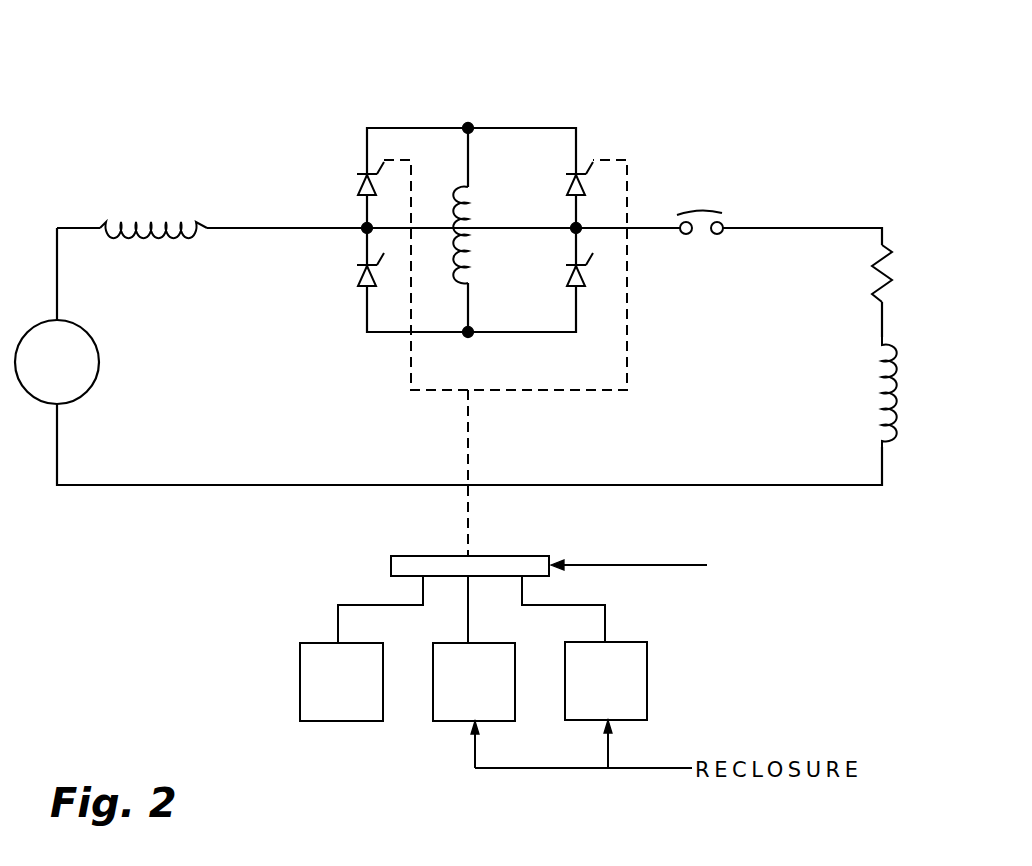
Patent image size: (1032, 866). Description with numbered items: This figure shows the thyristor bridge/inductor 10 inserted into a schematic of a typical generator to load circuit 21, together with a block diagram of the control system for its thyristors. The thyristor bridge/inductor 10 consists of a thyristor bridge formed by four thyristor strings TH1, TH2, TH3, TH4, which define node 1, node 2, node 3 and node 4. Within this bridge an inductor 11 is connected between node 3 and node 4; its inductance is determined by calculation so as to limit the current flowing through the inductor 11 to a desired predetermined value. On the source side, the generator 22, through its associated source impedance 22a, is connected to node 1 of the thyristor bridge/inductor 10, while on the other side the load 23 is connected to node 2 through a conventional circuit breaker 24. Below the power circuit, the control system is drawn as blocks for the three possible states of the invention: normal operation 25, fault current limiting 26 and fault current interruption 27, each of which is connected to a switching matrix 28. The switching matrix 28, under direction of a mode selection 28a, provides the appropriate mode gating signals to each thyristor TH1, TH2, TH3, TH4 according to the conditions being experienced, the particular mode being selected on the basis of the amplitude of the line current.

The thyristor bridge/inductor 10 is at (533, 95).
The node 3 is at (468, 126).
The node 4 is at (468, 334).
The node 1 is at (376, 228).
The node 2 is at (568, 228).
The inductor 11 is at (484, 196).
The thyristor string TH1 is at (355, 186).
The thyristor string TH2 is at (563, 270).
The thyristor string TH3 is at (565, 186).
The thyristor string TH4 is at (352, 268).
The generator to load circuit 21 is at (305, 500).
The generator 22 is at (99, 345).
The source impedance 22a is at (120, 220).
The load 23 is at (866, 331).
The circuit breaker 24 is at (690, 210).
The normal operation 25 is at (300, 697).
The fault current limiting 26 is at (433, 708).
The fault current interruption 27 is at (647, 680).
The switching matrix 28 is at (485, 554).
The mode selection 28a is at (595, 562).